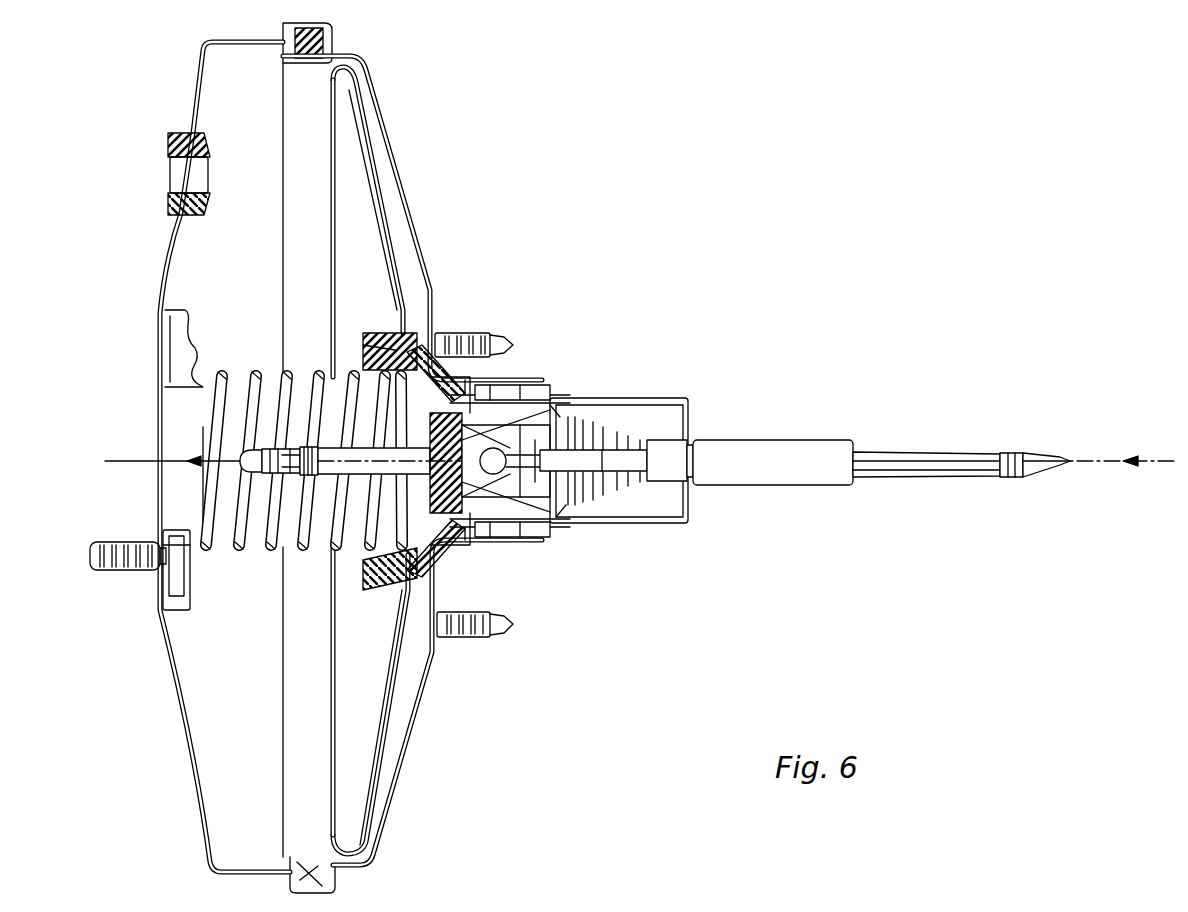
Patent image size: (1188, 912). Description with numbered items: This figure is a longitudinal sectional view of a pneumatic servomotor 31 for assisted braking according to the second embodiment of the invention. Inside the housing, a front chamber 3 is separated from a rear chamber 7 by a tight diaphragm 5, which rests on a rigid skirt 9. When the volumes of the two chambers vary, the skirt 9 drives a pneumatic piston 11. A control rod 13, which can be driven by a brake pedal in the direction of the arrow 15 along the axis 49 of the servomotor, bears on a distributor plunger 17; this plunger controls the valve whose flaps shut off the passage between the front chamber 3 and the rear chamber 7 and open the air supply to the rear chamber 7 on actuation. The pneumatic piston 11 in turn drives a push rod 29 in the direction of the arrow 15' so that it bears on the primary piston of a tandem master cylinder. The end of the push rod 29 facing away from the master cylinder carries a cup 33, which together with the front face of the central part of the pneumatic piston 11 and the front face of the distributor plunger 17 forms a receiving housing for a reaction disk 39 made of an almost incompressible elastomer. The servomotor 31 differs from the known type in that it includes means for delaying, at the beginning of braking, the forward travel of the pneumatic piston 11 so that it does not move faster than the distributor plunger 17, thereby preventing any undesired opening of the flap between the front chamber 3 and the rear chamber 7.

The front chamber 3 is at (254, 283).
The tight diaphragm 5 is at (364, 110).
The rear chamber 7 is at (378, 138).
The rigid skirt 9 is at (389, 237).
The pneumatic piston 11 is at (373, 600).
The control rod 13 is at (928, 450).
The arrow 15 is at (644, 446).
The arrow 15' is at (266, 448).
The distributor plunger 17 is at (461, 500).
The push rod 29 is at (340, 440).
The pneumatic servomotor 31 is at (440, 189).
The cup 33 is at (380, 514).
The reaction disk 39 is at (447, 423).
The axis 49 is at (1085, 465).